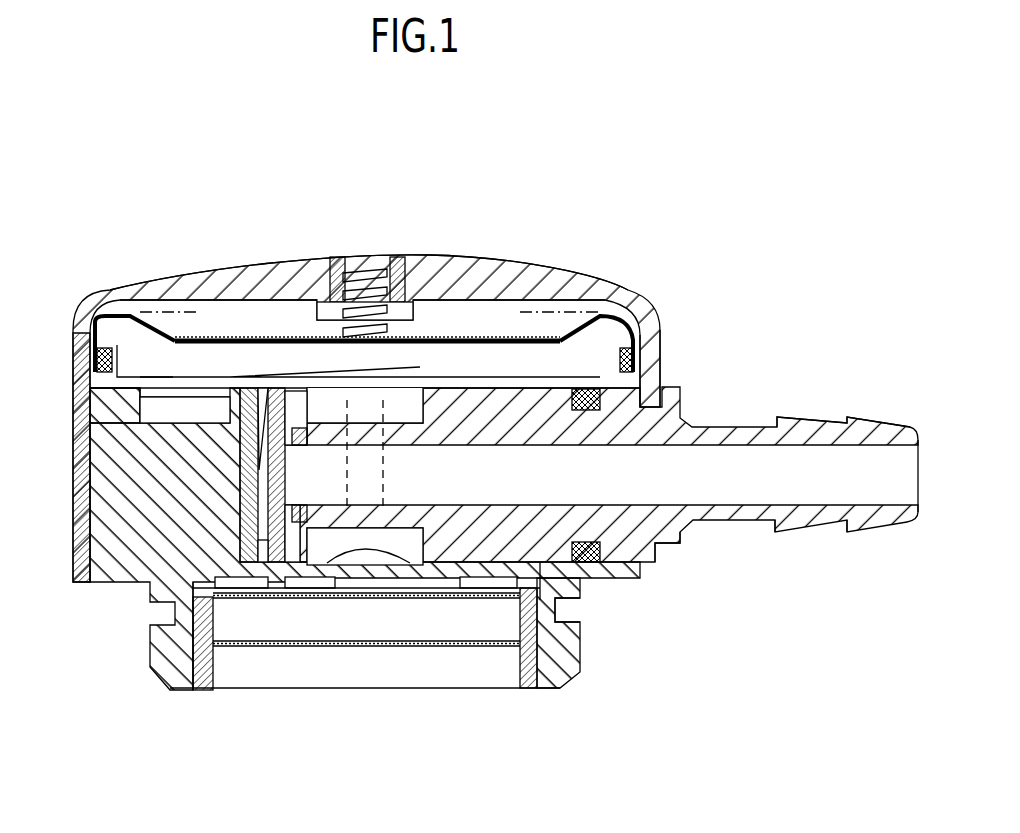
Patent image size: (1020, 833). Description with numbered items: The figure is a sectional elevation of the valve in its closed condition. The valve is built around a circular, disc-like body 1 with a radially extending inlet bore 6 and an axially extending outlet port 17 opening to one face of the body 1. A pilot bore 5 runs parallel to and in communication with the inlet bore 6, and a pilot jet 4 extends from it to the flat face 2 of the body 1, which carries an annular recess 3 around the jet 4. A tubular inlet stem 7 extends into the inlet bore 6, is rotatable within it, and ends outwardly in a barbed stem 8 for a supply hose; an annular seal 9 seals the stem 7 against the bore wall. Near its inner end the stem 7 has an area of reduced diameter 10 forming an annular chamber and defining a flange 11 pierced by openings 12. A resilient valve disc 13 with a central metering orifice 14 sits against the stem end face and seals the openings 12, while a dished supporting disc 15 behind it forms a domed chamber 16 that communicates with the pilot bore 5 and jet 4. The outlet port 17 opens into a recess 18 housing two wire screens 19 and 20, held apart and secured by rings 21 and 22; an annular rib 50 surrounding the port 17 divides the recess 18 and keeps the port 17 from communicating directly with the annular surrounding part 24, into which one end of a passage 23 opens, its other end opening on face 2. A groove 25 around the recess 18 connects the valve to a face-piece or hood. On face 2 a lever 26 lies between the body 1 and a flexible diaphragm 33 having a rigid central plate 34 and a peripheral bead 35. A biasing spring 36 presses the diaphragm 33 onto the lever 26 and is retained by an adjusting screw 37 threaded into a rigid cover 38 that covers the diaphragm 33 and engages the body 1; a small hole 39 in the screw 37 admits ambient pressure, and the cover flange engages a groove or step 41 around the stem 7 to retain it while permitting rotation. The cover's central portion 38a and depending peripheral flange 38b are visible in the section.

The disc-like body 1 is at (105, 472).
The face 2 is at (560, 375).
The annular recess 3 is at (93, 390).
The pilot jet 4 is at (152, 400).
The pilot bore 5 is at (95, 425).
The inlet bore 6 is at (410, 395).
The tubular inlet stem 7 is at (672, 410).
The barbed stem 8 is at (875, 525).
The annular seal 9 is at (595, 562).
The area of reduced diameter 10 is at (440, 560).
The flange 11 is at (300, 575).
The openings 12 is at (330, 560).
The resilient valve disc 13 is at (280, 455).
The metering orifice 14 is at (237, 476).
The dished supporting disc 15 is at (240, 555).
The conical or domed chamber 16 is at (262, 500).
The outlet port 17 is at (395, 560).
The recess 18 is at (390, 665).
The wire screen 19 is at (248, 592).
The wire screen 20 is at (262, 640).
The ring 21 is at (520, 620).
The ring 22 is at (530, 690).
The passage 23 is at (383, 470).
The annular surrounding part 24 is at (240, 590).
The groove 25 is at (570, 610).
The lever 26 is at (227, 357).
The flexible diaphragm 33 is at (118, 313).
The rigid central plate 34 is at (190, 343).
The peripheral bead 35 is at (100, 360).
The biasing spring 36 is at (292, 307).
The adjusting screw 37 is at (343, 257).
The rigid cover 38 is at (447, 240).
The cap top 38a is at (480, 275).
The cap side wall 38b is at (652, 340).
The small hole 39 is at (368, 262).
The groove or step 41 is at (665, 548).
The annular rib 50 is at (270, 585).